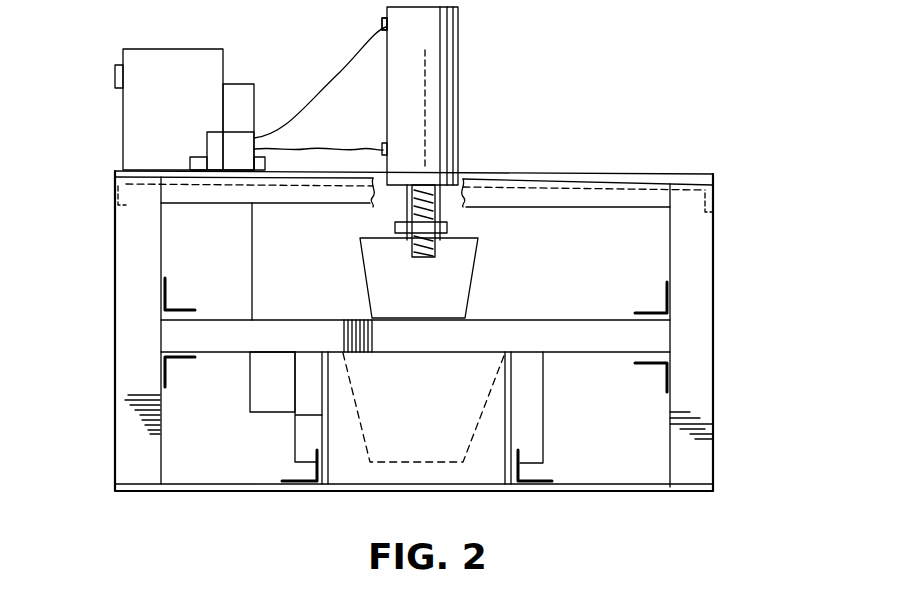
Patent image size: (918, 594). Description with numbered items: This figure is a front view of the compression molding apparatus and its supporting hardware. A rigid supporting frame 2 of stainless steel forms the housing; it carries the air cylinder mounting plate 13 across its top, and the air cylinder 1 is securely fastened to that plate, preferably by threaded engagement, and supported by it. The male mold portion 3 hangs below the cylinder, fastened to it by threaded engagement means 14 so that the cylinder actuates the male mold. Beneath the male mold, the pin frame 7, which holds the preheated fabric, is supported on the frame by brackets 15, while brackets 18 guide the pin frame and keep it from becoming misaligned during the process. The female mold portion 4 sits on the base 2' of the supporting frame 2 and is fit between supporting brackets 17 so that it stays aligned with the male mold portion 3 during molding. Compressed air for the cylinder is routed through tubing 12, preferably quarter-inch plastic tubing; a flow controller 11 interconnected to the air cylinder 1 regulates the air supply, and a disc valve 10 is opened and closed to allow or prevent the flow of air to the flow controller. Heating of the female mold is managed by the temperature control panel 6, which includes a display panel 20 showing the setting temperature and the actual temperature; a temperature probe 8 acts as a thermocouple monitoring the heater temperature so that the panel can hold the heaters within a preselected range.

The air cylinder 1 is at (460, 50).
The supporting frame 2 is at (437, 331).
The base 2' is at (414, 513).
The male mold portion 3 is at (466, 280).
The female mold portion 4 is at (343, 463).
The temperature control panel 6 is at (188, 109).
The pin frame 7 is at (222, 326).
The temperature probe 8 is at (295, 414).
The disc valve 10 is at (240, 138).
The flow controller 11 is at (383, 22).
The tubing 12 is at (330, 147).
The air cylinder mounting plate 13 is at (521, 172).
The threaded engagement means 14 is at (448, 228).
The brackets 15 is at (163, 368).
The supporting brackets 17 is at (548, 478).
The brackets 18 is at (165, 296).
The display panel 20 is at (115, 80).